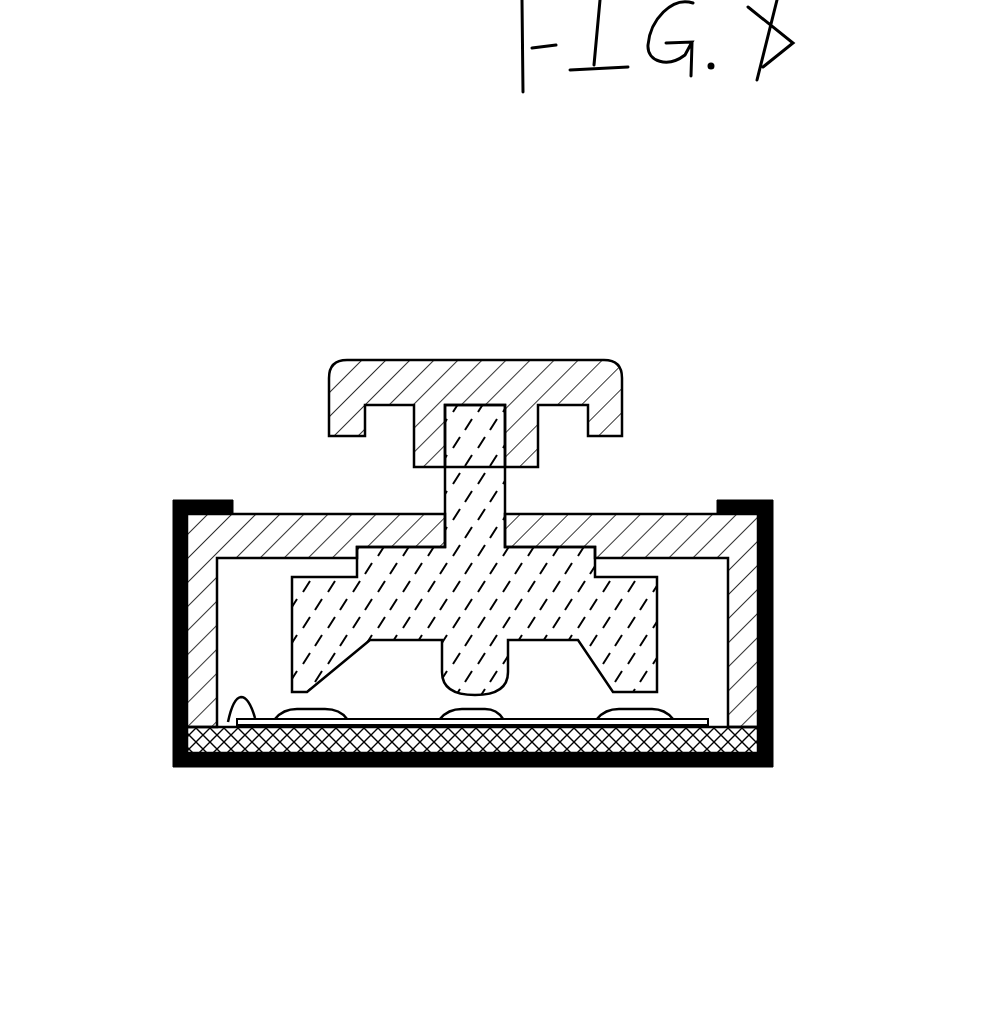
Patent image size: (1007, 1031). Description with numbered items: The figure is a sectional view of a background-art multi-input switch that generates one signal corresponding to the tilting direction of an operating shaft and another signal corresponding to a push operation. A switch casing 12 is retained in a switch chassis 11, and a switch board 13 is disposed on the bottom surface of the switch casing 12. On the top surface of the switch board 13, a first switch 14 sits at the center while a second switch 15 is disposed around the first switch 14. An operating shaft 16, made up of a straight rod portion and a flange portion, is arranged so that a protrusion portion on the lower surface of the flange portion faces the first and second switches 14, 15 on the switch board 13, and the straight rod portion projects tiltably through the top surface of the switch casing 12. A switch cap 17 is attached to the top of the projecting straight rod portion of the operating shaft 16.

The switch chassis 11 is at (780, 586).
The switch casing 12 is at (660, 509).
The switch board 13 is at (207, 763).
The first switch 14 is at (470, 712).
The second switch 15 is at (645, 712).
The operating shaft 16 is at (456, 408).
The switch cap 17 is at (558, 345).